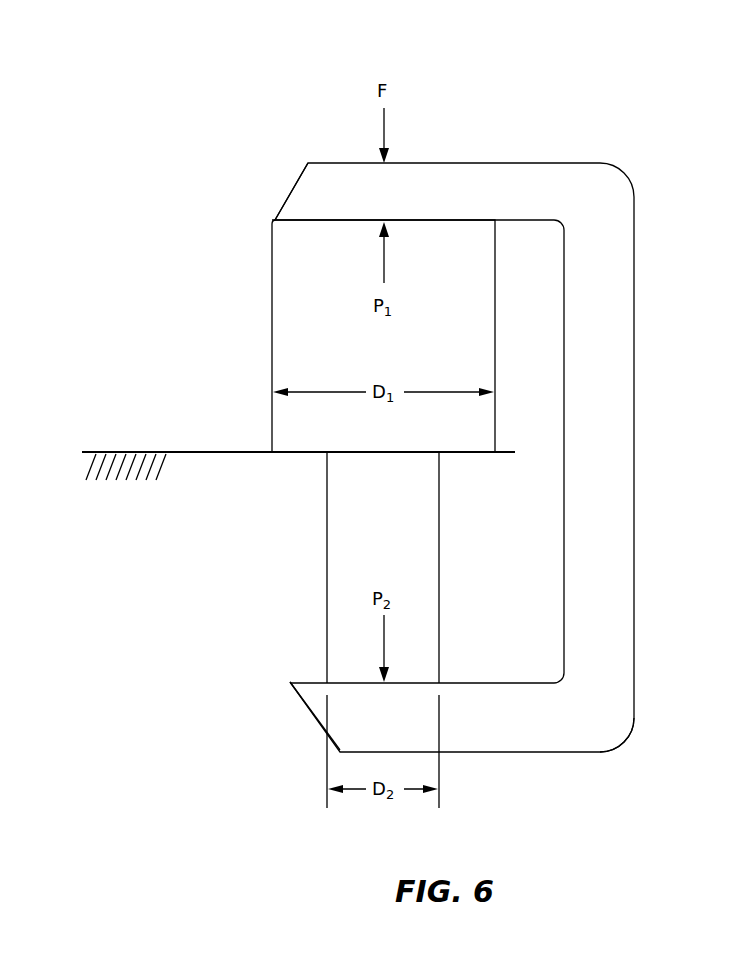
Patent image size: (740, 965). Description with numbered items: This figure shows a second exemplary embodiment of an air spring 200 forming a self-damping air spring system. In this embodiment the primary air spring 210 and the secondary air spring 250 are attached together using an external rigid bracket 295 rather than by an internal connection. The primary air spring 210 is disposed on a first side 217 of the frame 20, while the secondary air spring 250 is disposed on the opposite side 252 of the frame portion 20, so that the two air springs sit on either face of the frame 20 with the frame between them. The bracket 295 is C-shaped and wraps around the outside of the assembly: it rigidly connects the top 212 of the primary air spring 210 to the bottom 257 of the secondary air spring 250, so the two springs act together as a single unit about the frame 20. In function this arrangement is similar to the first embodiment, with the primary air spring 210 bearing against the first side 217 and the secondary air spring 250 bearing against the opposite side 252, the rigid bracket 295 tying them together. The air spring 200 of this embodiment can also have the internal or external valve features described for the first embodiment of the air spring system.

The air spring 200 is at (592, 72).
The top of the primary air spring 212 is at (322, 218).
The primary air spring 210 is at (246, 311).
The frame 20 is at (138, 451).
The first side of the frame 217 is at (460, 451).
The opposite side of the frame portion 252 is at (400, 455).
The secondary air spring 250 is at (283, 563).
The bottom of the secondary air spring 257 is at (348, 686).
The external rigid bracket 295 is at (596, 739).